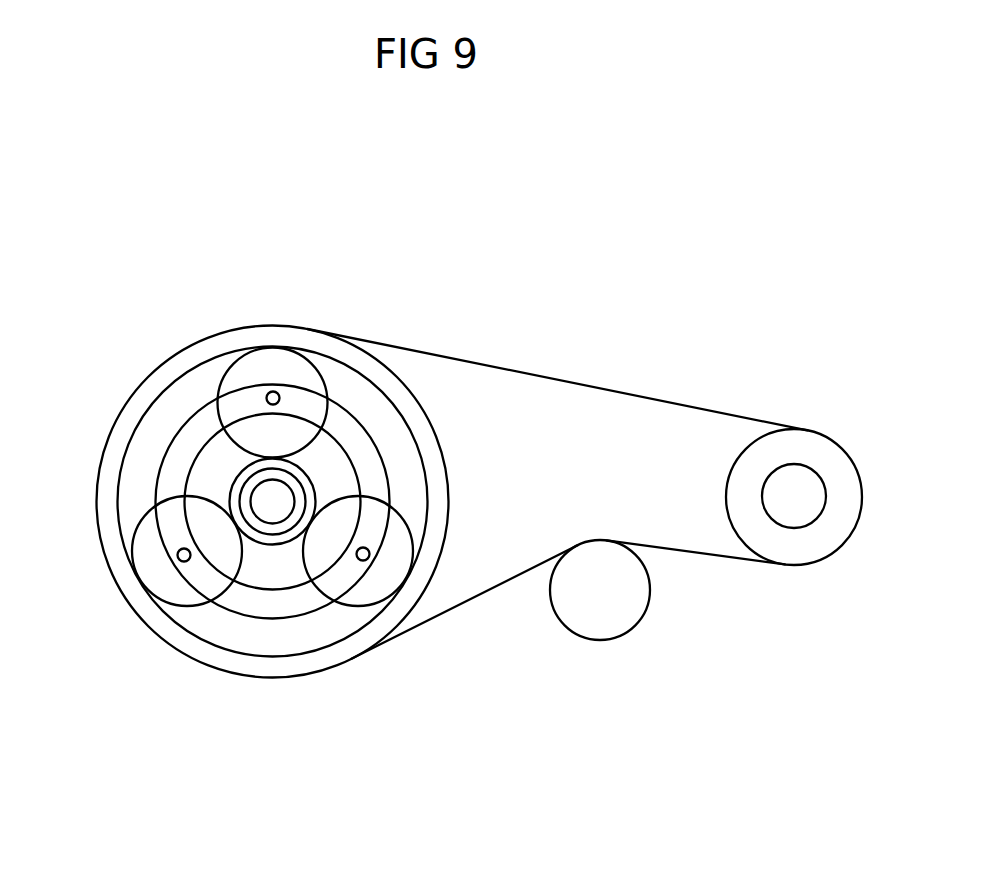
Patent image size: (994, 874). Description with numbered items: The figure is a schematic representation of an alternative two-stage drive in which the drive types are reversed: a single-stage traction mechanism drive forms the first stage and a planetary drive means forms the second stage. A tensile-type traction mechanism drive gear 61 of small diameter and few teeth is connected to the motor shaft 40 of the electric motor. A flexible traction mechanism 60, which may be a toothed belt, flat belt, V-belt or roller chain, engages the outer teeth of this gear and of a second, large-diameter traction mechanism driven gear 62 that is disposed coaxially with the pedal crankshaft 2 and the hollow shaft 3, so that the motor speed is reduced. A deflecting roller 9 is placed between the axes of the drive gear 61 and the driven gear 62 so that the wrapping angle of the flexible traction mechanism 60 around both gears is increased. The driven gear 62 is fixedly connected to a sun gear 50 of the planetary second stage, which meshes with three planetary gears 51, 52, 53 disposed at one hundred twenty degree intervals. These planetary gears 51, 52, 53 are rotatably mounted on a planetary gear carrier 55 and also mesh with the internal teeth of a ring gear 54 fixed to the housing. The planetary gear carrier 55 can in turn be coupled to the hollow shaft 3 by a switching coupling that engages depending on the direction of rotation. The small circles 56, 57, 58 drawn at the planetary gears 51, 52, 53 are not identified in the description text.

The pedal crankshaft 2 is at (257, 484).
The hollow shaft 3 is at (240, 497).
The deflecting roller 9 is at (612, 637).
The motor shaft 40 is at (797, 528).
The sun gear 50 is at (260, 545).
The planetary gear 51 is at (255, 363).
The planetary gear 52 is at (398, 540).
The planetary gear 53 is at (173, 590).
The ring gear 54 is at (205, 643).
The planetary gear carrier 55 is at (295, 605).
The planet wheel pin 56 is at (274, 392).
The planet wheel pin 57 is at (366, 560).
The planet wheel pin 58 is at (178, 560).
The flexible traction mechanism 60 is at (545, 377).
The traction mechanism drive gear 61 is at (843, 449).
The traction mechanism driven gear 62 is at (105, 565).